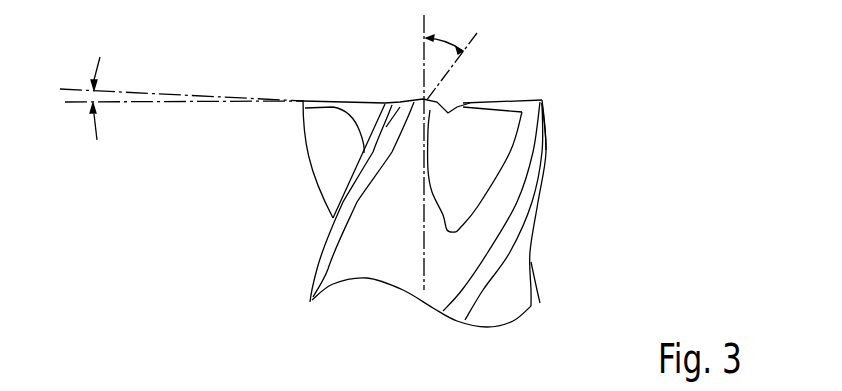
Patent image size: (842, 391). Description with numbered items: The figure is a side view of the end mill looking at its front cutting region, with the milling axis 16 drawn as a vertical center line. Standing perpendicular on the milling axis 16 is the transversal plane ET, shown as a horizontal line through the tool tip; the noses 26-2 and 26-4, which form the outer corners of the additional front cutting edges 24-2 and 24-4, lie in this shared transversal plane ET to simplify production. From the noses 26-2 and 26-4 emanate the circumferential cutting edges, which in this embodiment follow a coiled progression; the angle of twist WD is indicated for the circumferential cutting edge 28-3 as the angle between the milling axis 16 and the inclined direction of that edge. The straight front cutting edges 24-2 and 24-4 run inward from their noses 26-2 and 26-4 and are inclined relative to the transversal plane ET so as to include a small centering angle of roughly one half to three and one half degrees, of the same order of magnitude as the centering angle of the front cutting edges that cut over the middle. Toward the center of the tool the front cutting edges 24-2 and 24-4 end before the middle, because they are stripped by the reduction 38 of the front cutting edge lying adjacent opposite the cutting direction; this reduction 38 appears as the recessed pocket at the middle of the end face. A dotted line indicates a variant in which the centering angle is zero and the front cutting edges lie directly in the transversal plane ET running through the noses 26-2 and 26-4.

The milling axis 16 is at (427, 266).
The reduction 38 is at (473, 168).
The nose 26-2 is at (303, 100).
The nose 26-4 is at (543, 100).
The front cutting edge 24-2 is at (347, 100).
The front cutting edge 24-4 is at (505, 97).
The circumferential cutting edge 28-3 is at (347, 220).
The angle of twist WD is at (432, 36).
The transversal plane ET is at (140, 103).